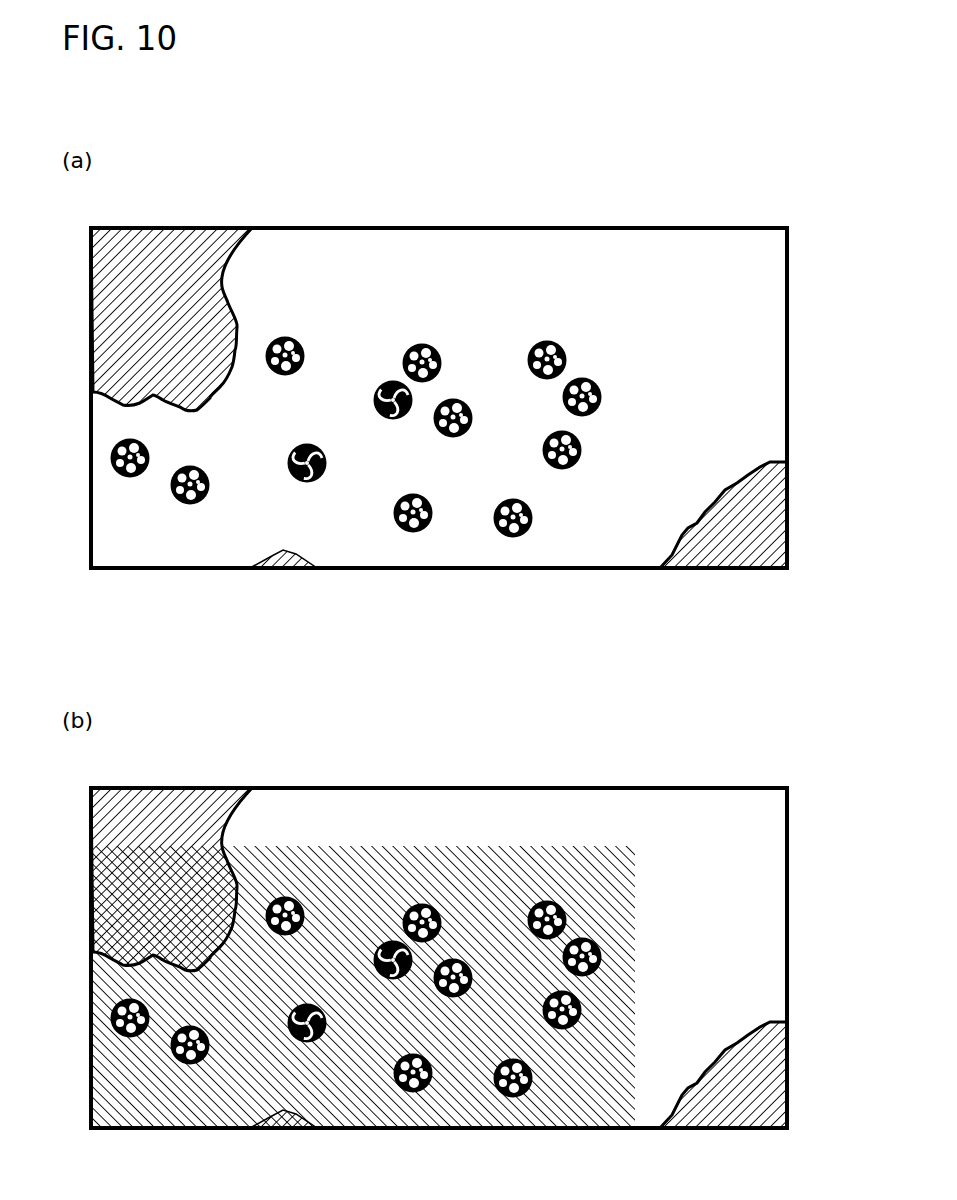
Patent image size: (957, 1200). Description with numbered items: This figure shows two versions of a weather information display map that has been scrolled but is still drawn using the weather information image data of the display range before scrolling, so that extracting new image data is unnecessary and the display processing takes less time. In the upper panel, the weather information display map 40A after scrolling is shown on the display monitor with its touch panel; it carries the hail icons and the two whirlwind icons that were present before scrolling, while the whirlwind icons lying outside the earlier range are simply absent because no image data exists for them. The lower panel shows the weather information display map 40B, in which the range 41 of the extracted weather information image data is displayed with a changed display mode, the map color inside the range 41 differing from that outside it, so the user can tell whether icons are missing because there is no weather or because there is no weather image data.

The weather information display map after scrolling 40A is at (765, 266).
The weather information display map 40B is at (483, 958).
The range of the extracted weather information image data 41 is at (400, 987).